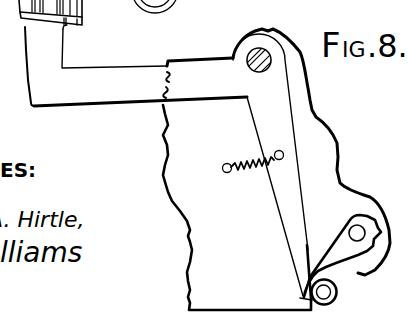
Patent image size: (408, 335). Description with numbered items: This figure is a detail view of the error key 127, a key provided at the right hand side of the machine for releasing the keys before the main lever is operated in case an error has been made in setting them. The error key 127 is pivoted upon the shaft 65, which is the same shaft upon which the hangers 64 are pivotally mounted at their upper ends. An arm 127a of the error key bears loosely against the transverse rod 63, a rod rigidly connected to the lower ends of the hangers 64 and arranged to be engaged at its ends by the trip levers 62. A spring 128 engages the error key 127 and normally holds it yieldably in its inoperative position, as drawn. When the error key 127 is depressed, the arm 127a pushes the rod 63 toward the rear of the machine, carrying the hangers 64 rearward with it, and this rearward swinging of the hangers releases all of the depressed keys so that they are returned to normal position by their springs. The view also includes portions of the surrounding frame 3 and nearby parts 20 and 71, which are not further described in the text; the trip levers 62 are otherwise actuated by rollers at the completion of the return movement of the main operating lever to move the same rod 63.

The frame 3 is at (216, 225).
The shaft 20 is at (224, 4).
The trip lever 62 is at (322, 240).
The transverse rod 63 is at (338, 295).
The hanger 64 is at (340, 283).
The shaft 65 is at (250, 51).
The lever 71 is at (337, 8).
The error key 127 is at (108, 90).
The arm 127a is at (294, 108).
The spring 128 is at (226, 167).